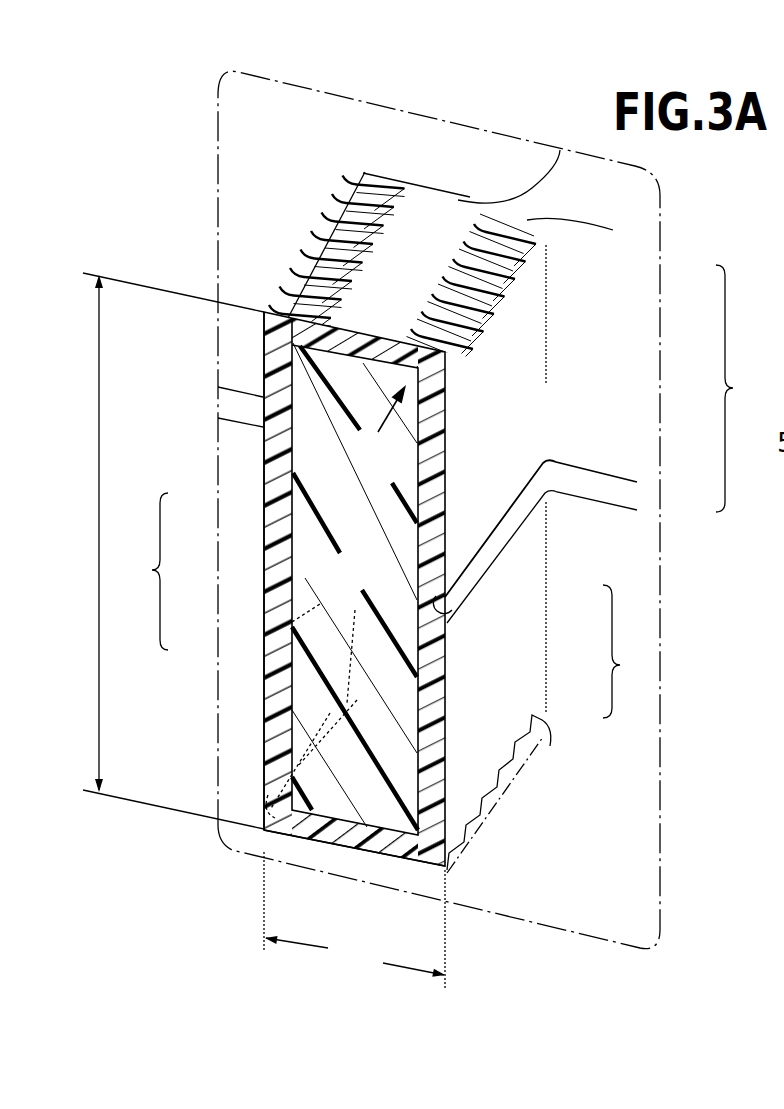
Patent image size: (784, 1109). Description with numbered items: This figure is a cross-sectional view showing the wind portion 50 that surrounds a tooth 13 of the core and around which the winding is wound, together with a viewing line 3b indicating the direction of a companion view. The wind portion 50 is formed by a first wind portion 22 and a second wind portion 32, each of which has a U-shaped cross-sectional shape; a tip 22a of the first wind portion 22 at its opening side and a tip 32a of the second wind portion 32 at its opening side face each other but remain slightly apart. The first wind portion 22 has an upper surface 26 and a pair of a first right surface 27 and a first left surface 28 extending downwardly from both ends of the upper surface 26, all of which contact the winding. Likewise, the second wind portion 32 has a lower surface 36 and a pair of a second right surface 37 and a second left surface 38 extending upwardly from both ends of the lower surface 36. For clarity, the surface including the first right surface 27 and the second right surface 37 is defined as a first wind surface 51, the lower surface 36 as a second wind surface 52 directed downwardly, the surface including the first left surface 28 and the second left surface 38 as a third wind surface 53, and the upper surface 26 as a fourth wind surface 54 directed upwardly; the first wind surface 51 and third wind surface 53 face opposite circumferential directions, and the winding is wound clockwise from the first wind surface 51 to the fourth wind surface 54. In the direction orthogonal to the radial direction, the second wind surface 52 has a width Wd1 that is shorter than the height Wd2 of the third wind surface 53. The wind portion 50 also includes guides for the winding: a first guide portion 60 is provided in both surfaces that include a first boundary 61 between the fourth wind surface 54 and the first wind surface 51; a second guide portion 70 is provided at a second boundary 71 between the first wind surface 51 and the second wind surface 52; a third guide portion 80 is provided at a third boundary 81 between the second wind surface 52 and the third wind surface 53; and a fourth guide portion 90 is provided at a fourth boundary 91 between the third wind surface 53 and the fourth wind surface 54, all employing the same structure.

The first wind portion 22 is at (534, 368).
The tip of the first wind portion 22a is at (437, 598).
The tooth 13 is at (368, 589).
The line 3b is at (378, 433).
The upper surface 26 is at (510, 186).
The first right surface 27 is at (480, 502).
The first left surface 28 is at (263, 497).
The second wind portion 32 is at (578, 541).
The tip of the second wind portion 32a is at (488, 547).
The lower surface 36 is at (352, 856).
The second right surface 37 is at (502, 682).
The second left surface 38 is at (263, 617).
The wind portion 50 is at (745, 388).
The first wind surface 51 is at (630, 651).
The second wind surface 52 is at (354, 881).
The third wind surface 53 is at (144, 571).
The fourth wind surface 54 is at (450, 230).
The first guide portion 60 is at (511, 301).
The first boundary 61 is at (477, 300).
The second guide portion 70 is at (528, 794).
The second boundary 71 is at (477, 822).
The third guide portion 80 is at (252, 711).
The third boundary 81 is at (265, 762).
The fourth guide portion 90 is at (321, 232).
The fourth boundary 91 is at (305, 258).
The width Wd1 is at (354, 920).
The height Wd2 is at (173, 551).